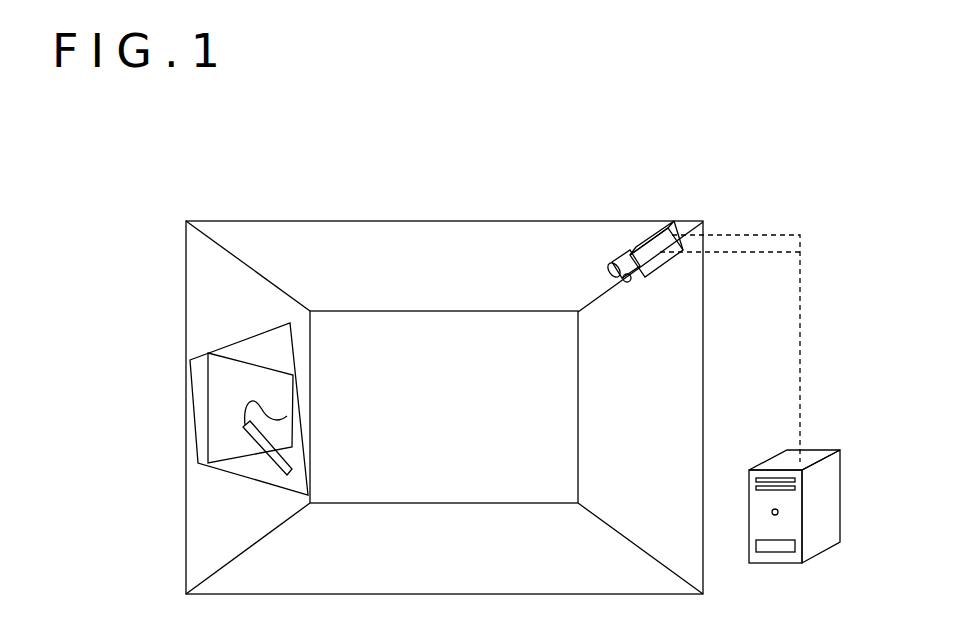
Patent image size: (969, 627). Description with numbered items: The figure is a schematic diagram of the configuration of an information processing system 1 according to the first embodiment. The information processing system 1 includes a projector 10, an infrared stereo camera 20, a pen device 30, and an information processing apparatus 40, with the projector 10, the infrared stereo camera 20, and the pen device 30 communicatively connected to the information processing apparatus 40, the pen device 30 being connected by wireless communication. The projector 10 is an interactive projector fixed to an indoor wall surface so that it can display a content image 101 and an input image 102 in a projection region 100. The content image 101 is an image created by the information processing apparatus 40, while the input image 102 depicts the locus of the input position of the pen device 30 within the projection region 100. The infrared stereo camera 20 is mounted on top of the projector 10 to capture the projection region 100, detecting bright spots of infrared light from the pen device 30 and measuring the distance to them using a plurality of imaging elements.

The information processing system 1 is at (275, 157).
The projector 10 is at (664, 238).
The infrared stereo camera 20 is at (622, 248).
The pen device 30 is at (280, 466).
The information processing apparatus 40 is at (828, 452).
The projection region 100 is at (210, 406).
The content image 101 is at (215, 378).
The input image 102 is at (285, 417).